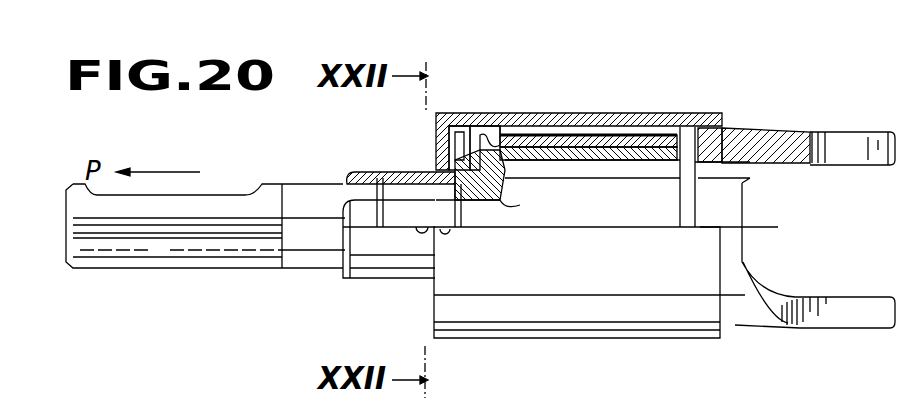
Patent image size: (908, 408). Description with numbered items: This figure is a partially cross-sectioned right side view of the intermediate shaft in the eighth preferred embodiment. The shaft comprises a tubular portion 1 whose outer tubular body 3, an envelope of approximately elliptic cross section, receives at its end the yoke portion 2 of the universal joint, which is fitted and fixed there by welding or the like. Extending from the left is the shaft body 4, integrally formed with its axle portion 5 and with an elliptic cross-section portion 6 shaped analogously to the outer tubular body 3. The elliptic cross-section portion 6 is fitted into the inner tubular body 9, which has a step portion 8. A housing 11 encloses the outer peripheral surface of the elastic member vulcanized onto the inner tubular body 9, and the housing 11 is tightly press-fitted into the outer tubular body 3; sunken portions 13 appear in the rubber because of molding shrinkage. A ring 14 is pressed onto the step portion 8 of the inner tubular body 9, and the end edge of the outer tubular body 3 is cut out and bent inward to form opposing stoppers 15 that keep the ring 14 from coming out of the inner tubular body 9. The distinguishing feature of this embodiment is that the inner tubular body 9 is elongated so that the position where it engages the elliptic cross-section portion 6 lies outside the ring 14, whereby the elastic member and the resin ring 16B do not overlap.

The tubular portion 1 is at (712, 106).
The yoke portion 2 is at (784, 130).
The outer tubular body 3 is at (651, 112).
The shaft body 4 is at (272, 183).
The axle portion 5 is at (206, 250).
The elliptic cross-section portion 6 is at (482, 216).
The step portion 8 is at (492, 178).
The inner tubular body 9 is at (590, 164).
The housing 11 is at (590, 126).
The sunken portions 13 is at (495, 113).
The ring 14 is at (452, 150).
The stopper 15 is at (448, 113).
The resin ring 16B is at (392, 174).